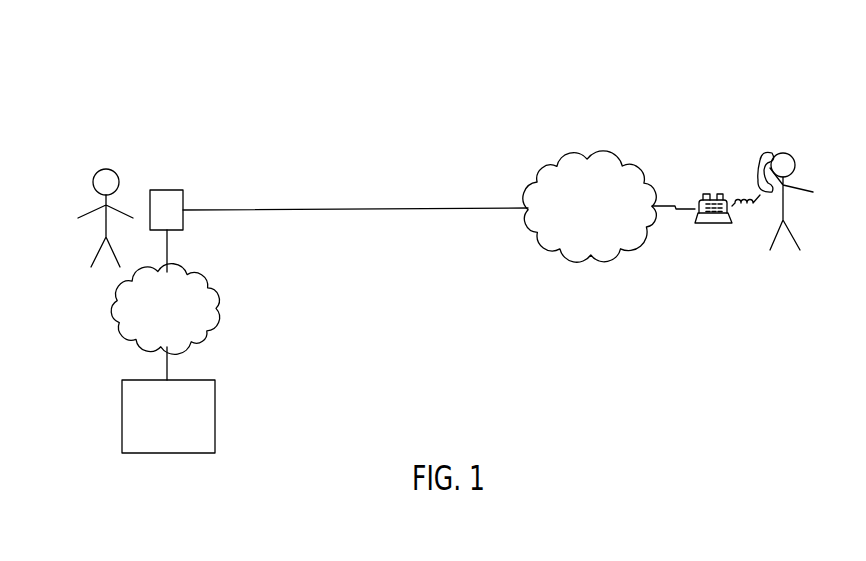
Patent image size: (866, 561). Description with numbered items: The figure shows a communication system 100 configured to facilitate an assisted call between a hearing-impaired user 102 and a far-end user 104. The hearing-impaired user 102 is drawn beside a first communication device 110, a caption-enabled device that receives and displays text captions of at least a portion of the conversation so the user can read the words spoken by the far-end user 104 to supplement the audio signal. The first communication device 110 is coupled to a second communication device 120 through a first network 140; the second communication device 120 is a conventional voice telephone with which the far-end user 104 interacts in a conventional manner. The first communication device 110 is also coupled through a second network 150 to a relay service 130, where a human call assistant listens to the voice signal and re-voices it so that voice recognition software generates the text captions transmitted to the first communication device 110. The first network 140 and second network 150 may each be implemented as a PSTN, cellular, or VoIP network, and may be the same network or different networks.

The communication system 100 is at (327, 73).
The hearing-impaired user 102 is at (93, 182).
The far-end user 104 is at (796, 164).
The first communication device 110 is at (165, 190).
The second communication device 120 is at (713, 180).
The relay service 130 is at (215, 415).
The first network 140 is at (605, 160).
The second network 150 is at (215, 302).